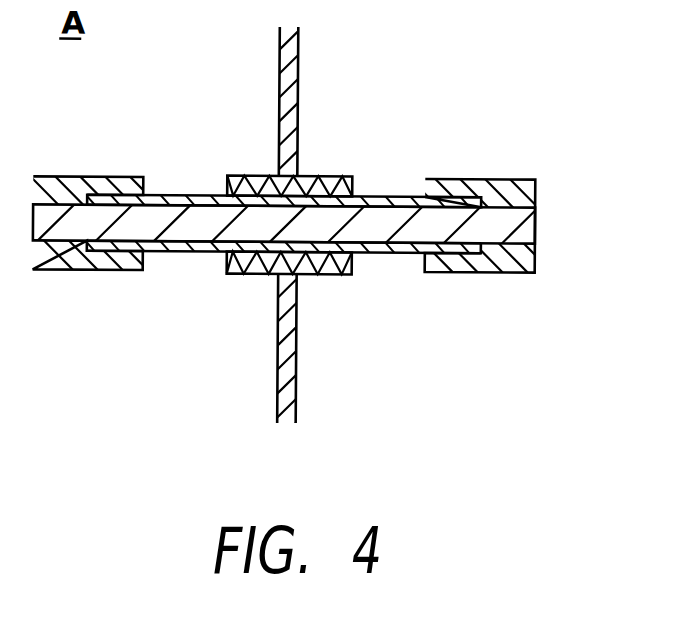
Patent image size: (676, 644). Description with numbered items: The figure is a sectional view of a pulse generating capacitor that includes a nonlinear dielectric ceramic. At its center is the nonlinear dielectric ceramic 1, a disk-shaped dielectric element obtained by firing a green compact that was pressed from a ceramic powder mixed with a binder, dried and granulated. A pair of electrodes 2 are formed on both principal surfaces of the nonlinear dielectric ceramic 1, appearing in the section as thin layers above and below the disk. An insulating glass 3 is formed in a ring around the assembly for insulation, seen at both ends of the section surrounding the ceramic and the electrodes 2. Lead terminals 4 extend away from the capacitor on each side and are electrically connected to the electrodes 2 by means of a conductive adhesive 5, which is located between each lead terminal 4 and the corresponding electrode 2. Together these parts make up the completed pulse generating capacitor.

The nonlinear dielectric ceramic 1 is at (512, 226).
The electrodes 2 is at (390, 197).
The insulating glass 3 is at (507, 191).
The lead terminals 4 is at (291, 74).
The conductive adhesive 5 is at (323, 188).